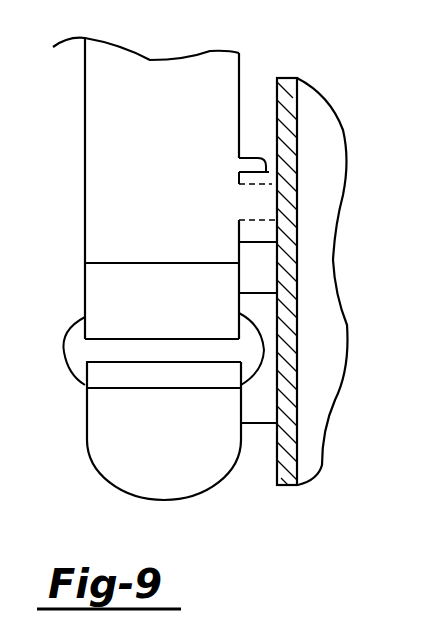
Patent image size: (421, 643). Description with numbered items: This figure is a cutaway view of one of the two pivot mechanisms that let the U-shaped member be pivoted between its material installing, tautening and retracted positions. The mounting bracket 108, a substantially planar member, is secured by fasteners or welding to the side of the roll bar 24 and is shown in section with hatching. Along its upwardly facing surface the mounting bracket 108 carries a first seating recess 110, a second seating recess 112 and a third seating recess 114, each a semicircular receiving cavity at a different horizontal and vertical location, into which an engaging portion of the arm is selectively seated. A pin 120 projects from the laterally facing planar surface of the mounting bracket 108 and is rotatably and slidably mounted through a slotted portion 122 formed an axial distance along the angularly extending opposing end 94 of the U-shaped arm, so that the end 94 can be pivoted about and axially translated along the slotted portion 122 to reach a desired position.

The angularly extending opposing end 94 is at (103, 123).
The slotted portion 122 is at (106, 293).
The second seating recess 112 is at (265, 178).
The third seating recess 114 is at (258, 221).
The first seating recess 110 is at (258, 248).
The pin 120 is at (268, 172).
The mounting bracket 108 is at (258, 425).
The first roll bar 24 is at (340, 148).